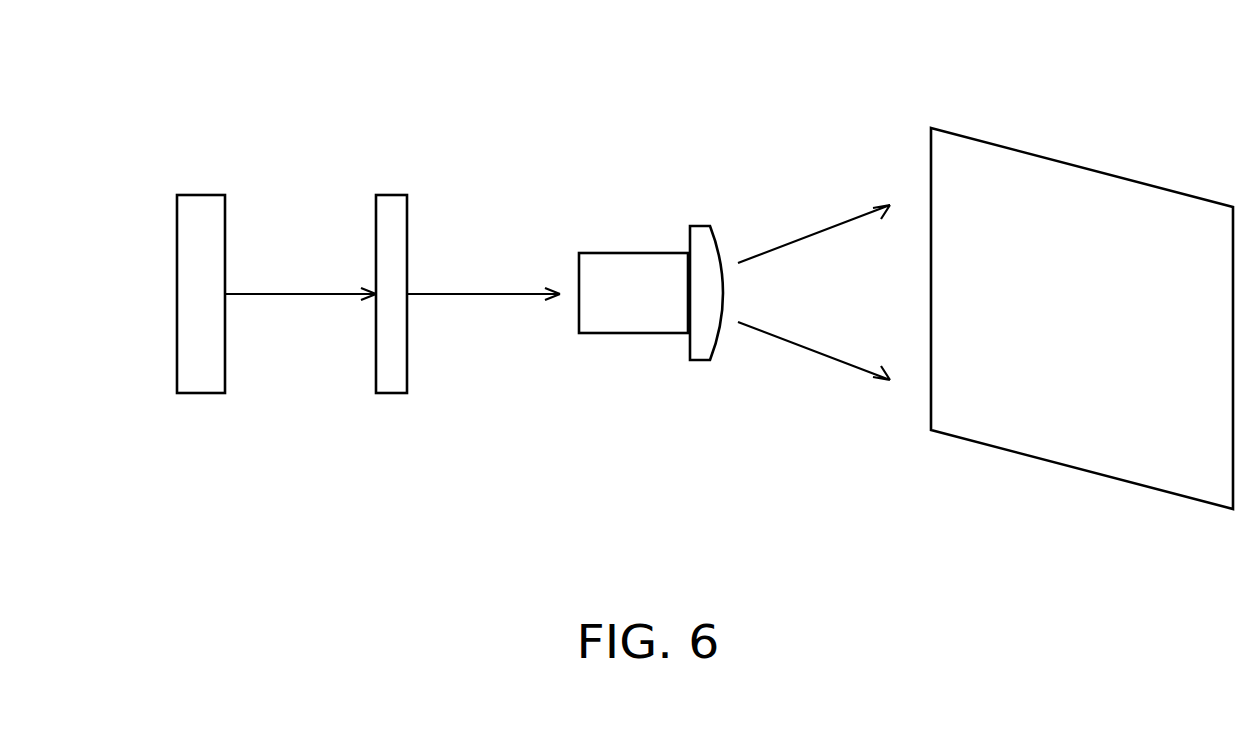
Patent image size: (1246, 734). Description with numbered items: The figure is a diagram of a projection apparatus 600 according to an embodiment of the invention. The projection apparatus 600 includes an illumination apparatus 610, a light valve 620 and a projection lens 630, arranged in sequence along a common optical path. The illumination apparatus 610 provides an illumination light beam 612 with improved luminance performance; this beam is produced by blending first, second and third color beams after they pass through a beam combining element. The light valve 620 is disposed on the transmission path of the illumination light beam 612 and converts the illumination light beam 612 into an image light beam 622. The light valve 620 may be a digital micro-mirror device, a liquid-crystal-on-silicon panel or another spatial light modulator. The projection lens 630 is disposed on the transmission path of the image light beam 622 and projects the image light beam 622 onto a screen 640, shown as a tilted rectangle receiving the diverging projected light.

The projection apparatus 600 is at (428, 138).
The illumination apparatus 610 is at (202, 393).
The illumination light beam 612 is at (302, 292).
The light valve 620 is at (390, 393).
The image light beam 622 is at (484, 292).
The projection lens 630 is at (634, 333).
The screen 640 is at (1078, 472).